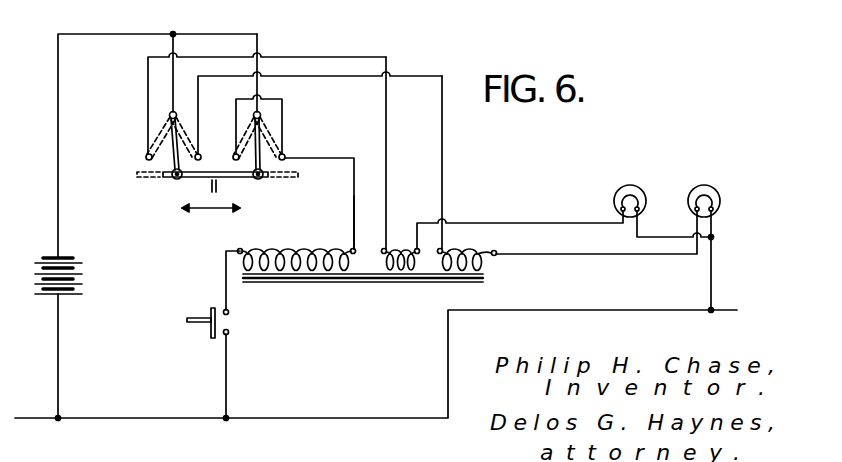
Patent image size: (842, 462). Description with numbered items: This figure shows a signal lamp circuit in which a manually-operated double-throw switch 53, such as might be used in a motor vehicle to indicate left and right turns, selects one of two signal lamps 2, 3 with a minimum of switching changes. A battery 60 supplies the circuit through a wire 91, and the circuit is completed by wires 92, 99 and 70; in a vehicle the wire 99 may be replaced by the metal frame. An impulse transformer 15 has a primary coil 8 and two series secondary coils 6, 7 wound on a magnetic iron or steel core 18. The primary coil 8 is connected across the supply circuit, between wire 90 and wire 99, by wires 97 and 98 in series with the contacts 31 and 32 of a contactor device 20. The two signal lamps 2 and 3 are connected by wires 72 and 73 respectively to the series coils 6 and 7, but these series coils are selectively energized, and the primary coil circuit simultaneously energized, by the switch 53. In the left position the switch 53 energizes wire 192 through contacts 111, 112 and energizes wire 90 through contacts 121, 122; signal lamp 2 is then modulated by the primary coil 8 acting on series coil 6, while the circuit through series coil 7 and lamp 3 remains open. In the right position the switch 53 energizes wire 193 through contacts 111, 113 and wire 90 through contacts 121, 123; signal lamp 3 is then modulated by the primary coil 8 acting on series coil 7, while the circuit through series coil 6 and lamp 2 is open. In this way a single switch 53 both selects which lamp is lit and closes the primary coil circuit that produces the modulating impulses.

The wire 91 is at (128, 34).
The contact 111 is at (172, 112).
The contact 112 is at (146, 157).
The contact 113 is at (311, 136).
The contact 121 is at (260, 115).
The contact 122 is at (235, 155).
The contact 123 is at (285, 157).
The manually-operated double-throw switch 53 is at (172, 181).
The battery 60 is at (52, 257).
The wire 92 is at (58, 362).
The wire 97 is at (226, 273).
The contact 32 is at (229, 312).
The contact 31 is at (228, 334).
The wire 98 is at (228, 376).
The contactor device 20 is at (208, 329).
The primary coil 8 is at (288, 252).
The core 18 is at (320, 280).
The impulse transformer 15 is at (371, 284).
The wire 90 is at (354, 194).
The wire 192 is at (388, 153).
The wire 193 is at (444, 153).
The series coil 6 is at (392, 252).
The series coil 7 is at (452, 254).
The wire 72 is at (535, 224).
The wire 73 is at (558, 256).
The signal lamp 2 is at (633, 186).
The signal lamp 3 is at (709, 186).
The wire 70 is at (713, 270).
The wire 99 is at (605, 311).